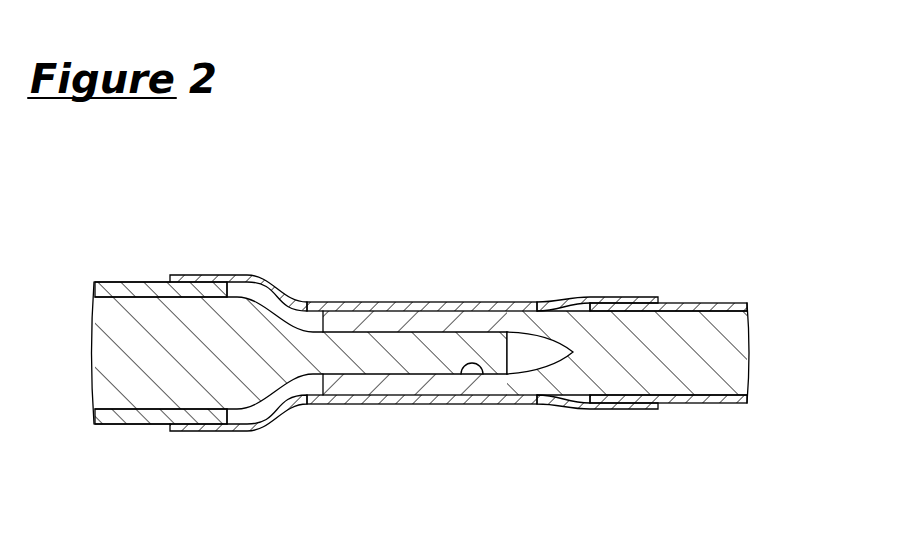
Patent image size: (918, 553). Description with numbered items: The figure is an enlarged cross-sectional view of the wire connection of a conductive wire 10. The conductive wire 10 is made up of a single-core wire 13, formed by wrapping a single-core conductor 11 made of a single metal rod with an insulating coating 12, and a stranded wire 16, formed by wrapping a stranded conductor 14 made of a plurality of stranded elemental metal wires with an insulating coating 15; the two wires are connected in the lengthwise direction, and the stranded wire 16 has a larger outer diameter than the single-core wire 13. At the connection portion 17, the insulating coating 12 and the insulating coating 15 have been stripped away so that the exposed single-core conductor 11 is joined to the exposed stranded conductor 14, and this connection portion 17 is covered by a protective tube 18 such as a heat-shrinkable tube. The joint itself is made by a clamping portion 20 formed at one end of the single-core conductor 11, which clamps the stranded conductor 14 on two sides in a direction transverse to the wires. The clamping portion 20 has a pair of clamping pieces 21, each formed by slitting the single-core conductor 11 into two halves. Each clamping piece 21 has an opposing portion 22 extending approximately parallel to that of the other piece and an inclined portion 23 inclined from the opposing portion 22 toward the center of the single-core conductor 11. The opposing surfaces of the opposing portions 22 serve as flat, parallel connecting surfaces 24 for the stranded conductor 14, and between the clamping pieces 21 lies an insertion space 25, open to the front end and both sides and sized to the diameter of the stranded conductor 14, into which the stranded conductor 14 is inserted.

The conductive wire 10 is at (433, 153).
The single-core conductor 11 is at (708, 325).
The insulating coating 12 is at (732, 305).
The single-core wire 13 is at (663, 333).
The stranded conductor 14 is at (263, 328).
The insulating coating 15 is at (128, 288).
The stranded wire 16 is at (185, 353).
The connection portion 17 is at (438, 322).
The protective tube 18 is at (363, 308).
The clamping portion 20 is at (492, 320).
The clamping pieces 21 is at (370, 323).
The opposing portion 22 is at (412, 385).
The inclined portion 23 is at (535, 383).
The connecting surfaces 24 is at (481, 368).
The insertion space 25 is at (423, 352).